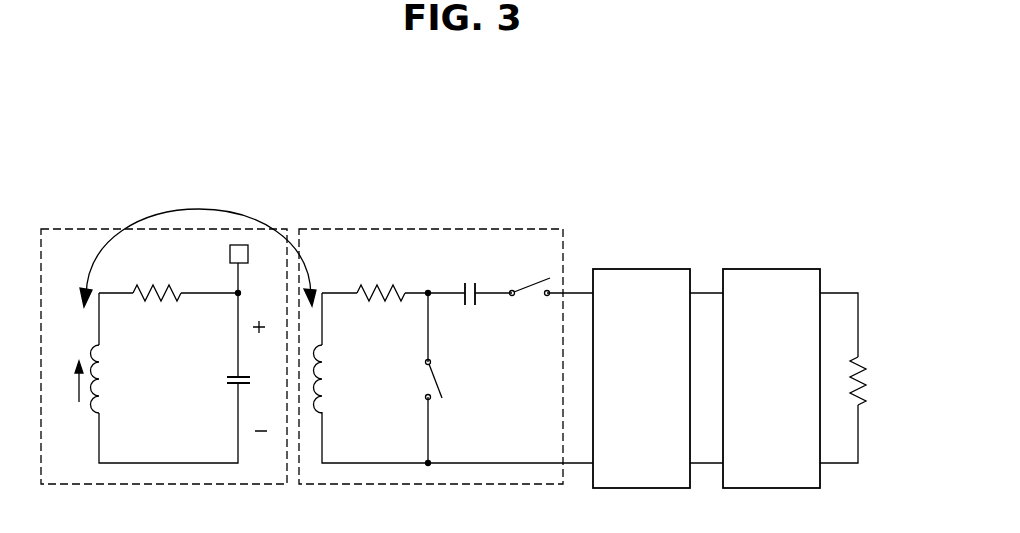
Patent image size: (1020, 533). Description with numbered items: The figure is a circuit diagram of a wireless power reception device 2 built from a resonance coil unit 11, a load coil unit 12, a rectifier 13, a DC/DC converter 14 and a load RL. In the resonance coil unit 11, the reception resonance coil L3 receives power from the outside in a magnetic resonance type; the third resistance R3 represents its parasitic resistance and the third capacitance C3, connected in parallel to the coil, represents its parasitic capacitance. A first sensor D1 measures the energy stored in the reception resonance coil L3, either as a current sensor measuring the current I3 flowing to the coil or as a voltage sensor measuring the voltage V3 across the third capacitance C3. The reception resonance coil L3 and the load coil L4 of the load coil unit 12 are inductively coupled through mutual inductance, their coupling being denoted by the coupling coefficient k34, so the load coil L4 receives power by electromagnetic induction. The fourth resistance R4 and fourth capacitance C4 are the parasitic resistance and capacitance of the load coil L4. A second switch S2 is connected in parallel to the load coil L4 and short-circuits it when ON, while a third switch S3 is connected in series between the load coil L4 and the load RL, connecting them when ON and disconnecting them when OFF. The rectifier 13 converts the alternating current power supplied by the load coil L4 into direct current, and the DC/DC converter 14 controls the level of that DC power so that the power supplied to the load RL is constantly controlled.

The wireless power reception device 2 is at (546, 98).
The resonance coil unit 11 is at (95, 227).
The load coil unit 12 is at (446, 228).
The rectifier 13 is at (641, 269).
The DC/DC converter 14 is at (771, 269).
The third resistance R3 is at (157, 279).
The reception resonance coil L3 is at (108, 379).
The third capacitance C3 is at (223, 385).
The voltage V3 is at (265, 376).
The current I3 is at (68, 381).
The first sensor D1 is at (240, 245).
The coupling coefficient k34 is at (198, 247).
The fourth resistance R4 is at (381, 279).
The load coil L4 is at (333, 379).
The fourth capacitance C4 is at (468, 281).
The second switch S2 is at (420, 380).
The third switch S3 is at (530, 276).
The load RL is at (859, 378).